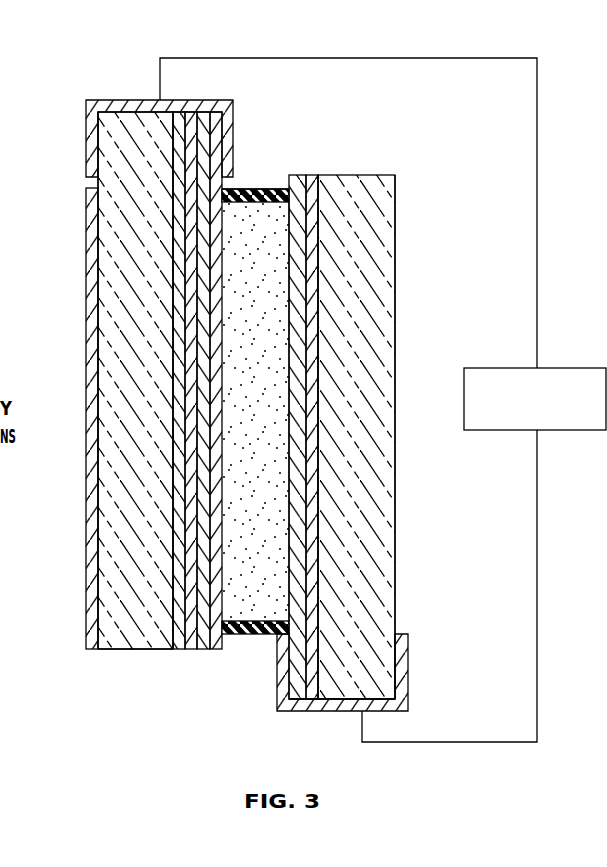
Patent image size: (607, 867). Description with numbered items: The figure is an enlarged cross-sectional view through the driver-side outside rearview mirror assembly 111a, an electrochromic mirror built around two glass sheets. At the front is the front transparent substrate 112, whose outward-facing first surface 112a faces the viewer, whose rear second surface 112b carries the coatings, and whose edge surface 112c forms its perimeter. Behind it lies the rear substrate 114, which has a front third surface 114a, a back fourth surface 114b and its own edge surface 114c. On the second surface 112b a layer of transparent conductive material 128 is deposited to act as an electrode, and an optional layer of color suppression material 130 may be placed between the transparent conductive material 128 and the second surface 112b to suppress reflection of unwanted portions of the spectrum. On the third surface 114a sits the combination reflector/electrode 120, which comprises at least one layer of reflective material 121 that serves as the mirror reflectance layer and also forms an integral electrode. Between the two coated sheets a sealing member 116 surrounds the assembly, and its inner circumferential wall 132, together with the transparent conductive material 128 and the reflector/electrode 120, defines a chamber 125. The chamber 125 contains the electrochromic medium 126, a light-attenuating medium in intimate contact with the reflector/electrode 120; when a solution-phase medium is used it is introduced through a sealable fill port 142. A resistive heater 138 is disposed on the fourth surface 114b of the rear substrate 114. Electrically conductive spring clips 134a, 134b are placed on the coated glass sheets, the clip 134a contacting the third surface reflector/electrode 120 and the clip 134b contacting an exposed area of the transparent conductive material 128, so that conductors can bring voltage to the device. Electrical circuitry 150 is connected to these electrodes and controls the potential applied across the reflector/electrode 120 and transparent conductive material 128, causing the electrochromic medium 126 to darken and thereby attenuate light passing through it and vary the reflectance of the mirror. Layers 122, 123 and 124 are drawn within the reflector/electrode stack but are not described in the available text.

The driver-side outside rearview mirror assembly 111a is at (74, 62).
The front transparent substrate 112 is at (362, 300).
The first surface 112a is at (395, 345).
The second surface 112b is at (320, 232).
The edge surface of front substrate 112c is at (344, 711).
The rear substrate 114 is at (120, 541).
The third surface 114a is at (178, 478).
The fourth surface 114b is at (97, 598).
The edge surface of rear substrate 114c is at (133, 649).
The sealing member 116 is at (270, 190).
The reflector/electrode 120 is at (127, 407).
The reflective material layer 121 is at (204, 370).
The separator layer 122 is at (176, 294).
The separator layer 123 is at (191, 326).
The separator layer 124 is at (216, 420).
The chamber 125 is at (268, 554).
The electrochromic medium 126 is at (270, 582).
The transparent conductive material 128 is at (298, 175).
The color suppression material 130 is at (312, 175).
The inner circumferential wall 132 is at (243, 206).
The spring clip 134a is at (86, 128).
The spring clip 134b is at (407, 660).
The resistive heater 138 is at (86, 223).
The sealable fill port 142 is at (242, 637).
The electrical circuitry 150 is at (560, 368).